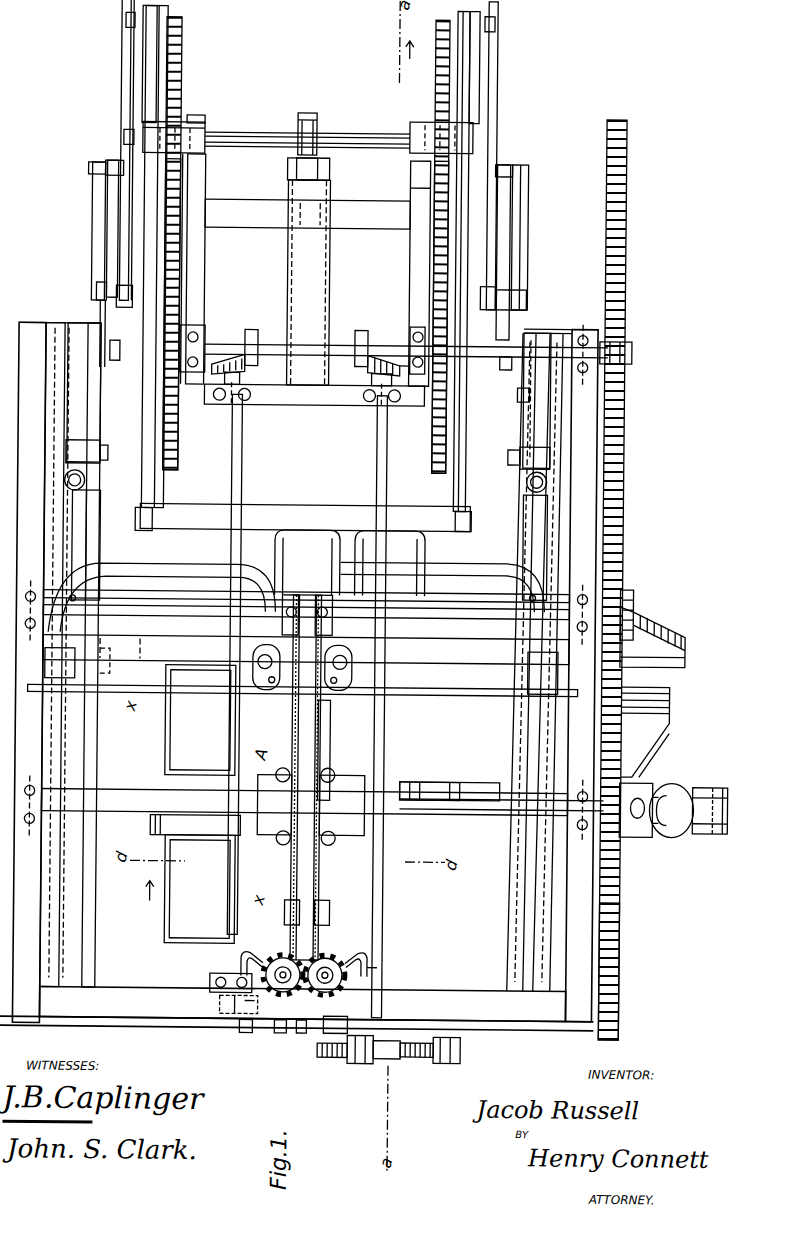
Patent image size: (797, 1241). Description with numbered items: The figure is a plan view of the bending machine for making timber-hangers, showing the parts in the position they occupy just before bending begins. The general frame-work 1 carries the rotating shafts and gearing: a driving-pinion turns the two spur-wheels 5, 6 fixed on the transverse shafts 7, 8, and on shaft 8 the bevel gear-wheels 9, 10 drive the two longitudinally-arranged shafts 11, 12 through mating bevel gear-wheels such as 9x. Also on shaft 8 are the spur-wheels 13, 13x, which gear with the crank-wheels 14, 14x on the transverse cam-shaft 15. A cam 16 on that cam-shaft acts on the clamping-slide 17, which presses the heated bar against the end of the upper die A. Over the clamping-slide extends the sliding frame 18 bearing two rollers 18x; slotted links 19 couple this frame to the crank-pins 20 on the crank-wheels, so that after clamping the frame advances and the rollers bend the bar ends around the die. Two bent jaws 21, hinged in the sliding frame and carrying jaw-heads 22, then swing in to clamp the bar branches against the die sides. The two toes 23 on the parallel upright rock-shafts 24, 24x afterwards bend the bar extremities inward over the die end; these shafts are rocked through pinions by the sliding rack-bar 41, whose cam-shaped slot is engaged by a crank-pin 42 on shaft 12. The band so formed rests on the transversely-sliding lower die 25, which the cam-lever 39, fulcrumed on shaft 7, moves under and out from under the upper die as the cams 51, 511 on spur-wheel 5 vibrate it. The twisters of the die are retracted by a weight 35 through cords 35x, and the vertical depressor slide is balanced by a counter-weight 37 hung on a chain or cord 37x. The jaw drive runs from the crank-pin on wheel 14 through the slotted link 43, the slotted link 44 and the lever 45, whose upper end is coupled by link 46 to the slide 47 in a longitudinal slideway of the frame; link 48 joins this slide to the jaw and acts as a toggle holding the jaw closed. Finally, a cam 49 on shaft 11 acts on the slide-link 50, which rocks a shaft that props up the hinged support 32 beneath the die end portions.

The general frame-work 1 is at (305, 590).
The spur-wheel 5 is at (624, 947).
The cam 51 is at (658, 752).
The cam 511 is at (672, 612).
The spur-wheel 6 is at (624, 388).
The transverse shaft 7 is at (484, 810).
The transverse shaft 8 is at (476, 355).
The bevel gear-wheel 9 is at (357, 330).
The bevel gear-wheel 9x is at (383, 345).
The bevel gear-wheel 10 is at (222, 340).
The longitudinally-arranged shaft 11 is at (375, 467).
The longitudinally-arranged shaft 12 is at (222, 664).
The spur-wheel 13 is at (432, 292).
The spur-wheel 13x is at (172, 285).
The crank-wheel 14 is at (428, 20).
The crank-wheel 14x is at (177, 72).
The transverse cam-shaft 15 is at (253, 133).
The cam 16 is at (303, 113).
The clamping-slide 17 is at (309, 282).
The sliding frame 18 is at (276, 545).
The rollers 18x is at (265, 690).
The slotted links 19 is at (140, 408).
The crank-pins 20 is at (120, 22).
The bent jaws 21 is at (296, 598).
The jaw-heads 22 is at (57, 692).
The bending-toes 23 is at (251, 950).
The upright rock-shaft 24 is at (282, 958).
The upright rock-shaft 24x is at (293, 1033).
The lower die 25 is at (481, 790).
The hinged support 32 is at (195, 804).
The weight 35 is at (292, 595).
The cords 35x is at (293, 742).
The counter-weight 37 is at (322, 595).
The chain or cord 37x is at (326, 745).
The cam-lever 39 is at (653, 834).
The sliding rack-bar 41 is at (153, 1029).
The crank-pin 42 is at (248, 1033).
The slotted link 43 is at (137, 82).
The slotted link 44 is at (307, 155).
The lever 45 is at (88, 222).
The link 46 is at (90, 242).
The slide 47 is at (309, 409).
The link 48 is at (78, 528).
The cam 49 is at (343, 1058).
The slide-link 50 is at (424, 1060).